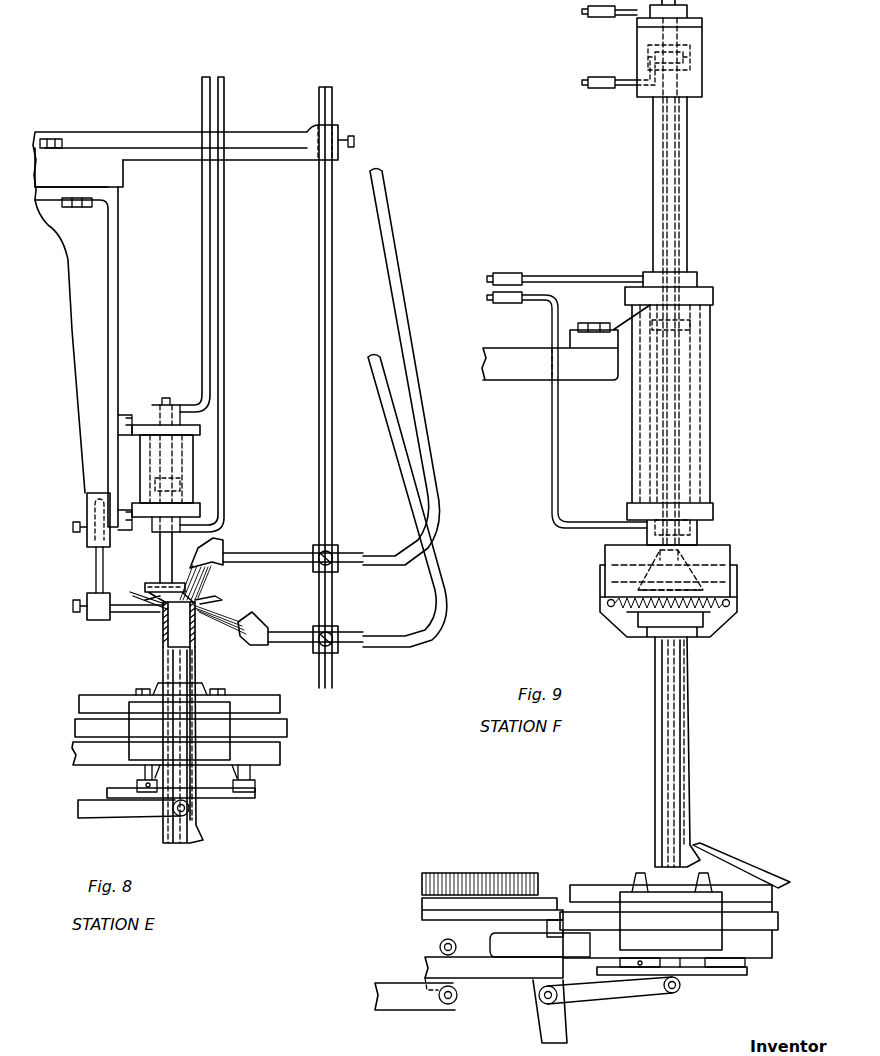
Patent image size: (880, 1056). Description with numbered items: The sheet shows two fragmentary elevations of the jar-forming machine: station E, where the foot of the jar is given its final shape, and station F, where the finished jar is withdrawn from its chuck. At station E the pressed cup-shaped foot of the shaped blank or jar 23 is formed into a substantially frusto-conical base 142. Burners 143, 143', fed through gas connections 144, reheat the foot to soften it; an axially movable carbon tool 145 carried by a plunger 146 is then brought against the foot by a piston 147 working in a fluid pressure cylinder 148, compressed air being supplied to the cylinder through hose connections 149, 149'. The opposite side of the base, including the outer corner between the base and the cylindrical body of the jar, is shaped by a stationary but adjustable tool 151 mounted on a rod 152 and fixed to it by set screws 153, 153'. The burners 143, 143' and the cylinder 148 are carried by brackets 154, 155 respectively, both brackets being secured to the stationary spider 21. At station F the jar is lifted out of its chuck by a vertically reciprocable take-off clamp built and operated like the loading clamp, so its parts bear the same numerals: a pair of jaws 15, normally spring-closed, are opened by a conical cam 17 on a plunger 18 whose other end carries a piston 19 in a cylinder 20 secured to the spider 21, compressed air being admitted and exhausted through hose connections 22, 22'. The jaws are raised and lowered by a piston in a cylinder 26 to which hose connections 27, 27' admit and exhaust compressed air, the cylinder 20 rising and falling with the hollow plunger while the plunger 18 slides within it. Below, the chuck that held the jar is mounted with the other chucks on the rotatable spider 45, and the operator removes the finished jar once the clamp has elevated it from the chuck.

In FIG. 8, the bracket 154 is at (257, 136).
In FIG. 8, the stationary spider 21 is at (124, 174).
In FIG. 9, the stationary spider 21 is at (512, 372).
In FIG. 8, the bracket 155 is at (118, 275).
In FIG. 8, the rod 152 is at (95, 570).
In FIG. 8, the set screw 153 is at (106, 617).
In FIG. 8, the set screw 153' is at (64, 517).
In FIG. 8, the stationary adjustable tool 151 is at (157, 613).
In FIG. 8, the fluid pressure cylinder 148 is at (190, 447).
In FIG. 8, the piston 147 is at (170, 495).
In FIG. 8, the hose connection 149 is at (222, 304).
In FIG. 8, the hose connection 149' is at (183, 244).
In FIG. 8, the plunger 146 is at (173, 557).
In FIG. 8, the carbon tool 145 is at (155, 586).
In FIG. 8, the frusto-conical base 142 is at (208, 600).
In FIG. 8, the burner 143 is at (271, 563).
In FIG. 8, the burner 143' is at (278, 622).
In FIG. 8, the gas connection 144 is at (398, 630).
In FIG. 8, the cylindrical blank 23 is at (163, 668).
In FIG. 9, the cylindrical blank 23 is at (688, 675).
In FIG. 9, the piston 19 is at (690, 58).
In FIG. 9, the cylinder 20 is at (648, 96).
In FIG. 9, the hose connection 22 is at (609, 27).
In FIG. 9, the hose connection 22' is at (617, 89).
In FIG. 9, the plunger 18 is at (675, 443).
In FIG. 9, the cylinder 26 is at (708, 364).
In FIG. 9, the hose connection 27 is at (565, 266).
In FIG. 9, the hose connection 27' is at (567, 410).
In FIG. 9, the conical cam 17 is at (702, 578).
In FIG. 9, the jaws 15 is at (627, 627).
In FIG. 9, the spider 45 is at (487, 972).